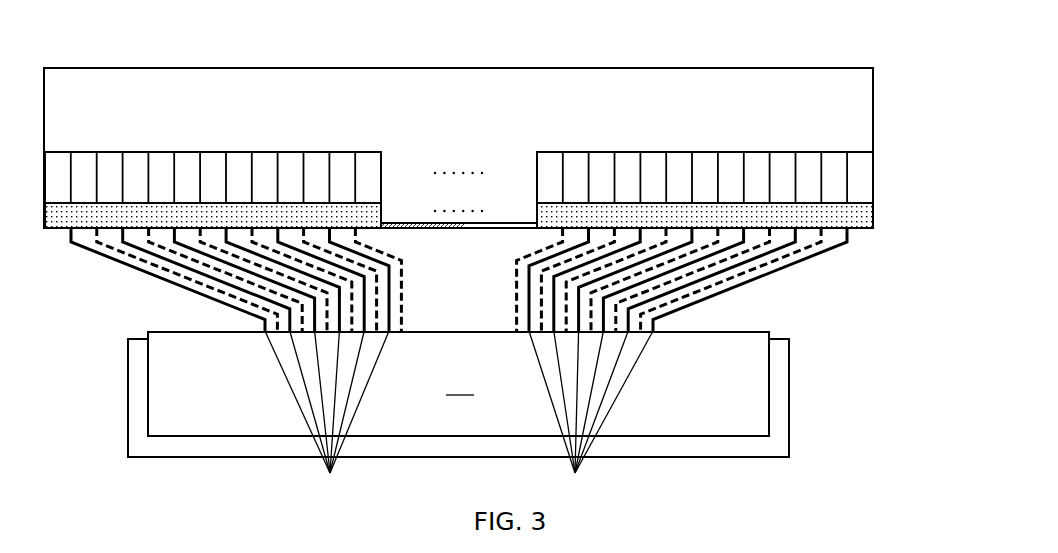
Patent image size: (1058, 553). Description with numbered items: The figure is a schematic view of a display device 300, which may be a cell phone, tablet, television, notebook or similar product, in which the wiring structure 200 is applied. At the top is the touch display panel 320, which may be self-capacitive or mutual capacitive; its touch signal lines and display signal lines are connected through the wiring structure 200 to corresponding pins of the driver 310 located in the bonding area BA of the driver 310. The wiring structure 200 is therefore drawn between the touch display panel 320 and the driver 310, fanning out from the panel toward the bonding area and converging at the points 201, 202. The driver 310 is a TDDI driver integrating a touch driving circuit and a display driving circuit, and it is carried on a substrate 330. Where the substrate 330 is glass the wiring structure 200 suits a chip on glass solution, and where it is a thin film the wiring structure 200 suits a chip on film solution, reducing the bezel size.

The display device 300 is at (484, 26).
The touch display panel 320 is at (820, 118).
The wiring structure 200 is at (790, 285).
The driver 310 is at (717, 383).
The substrate 330 is at (780, 429).
The first bonding point 201 is at (327, 414).
The second bonding point 202 is at (591, 414).